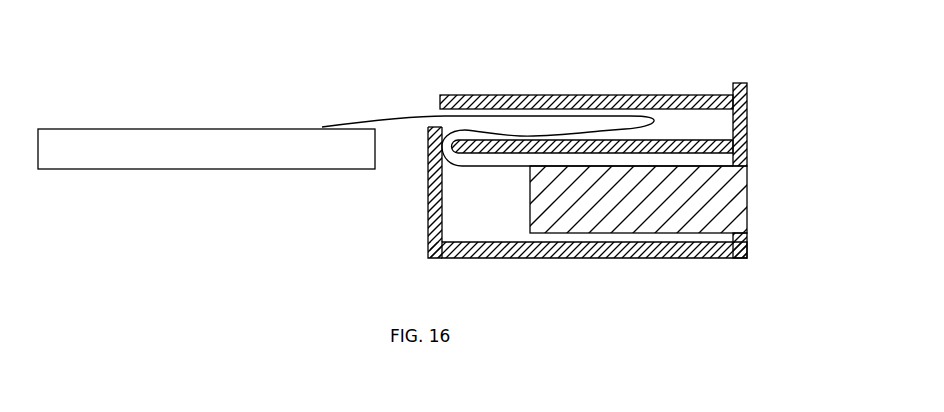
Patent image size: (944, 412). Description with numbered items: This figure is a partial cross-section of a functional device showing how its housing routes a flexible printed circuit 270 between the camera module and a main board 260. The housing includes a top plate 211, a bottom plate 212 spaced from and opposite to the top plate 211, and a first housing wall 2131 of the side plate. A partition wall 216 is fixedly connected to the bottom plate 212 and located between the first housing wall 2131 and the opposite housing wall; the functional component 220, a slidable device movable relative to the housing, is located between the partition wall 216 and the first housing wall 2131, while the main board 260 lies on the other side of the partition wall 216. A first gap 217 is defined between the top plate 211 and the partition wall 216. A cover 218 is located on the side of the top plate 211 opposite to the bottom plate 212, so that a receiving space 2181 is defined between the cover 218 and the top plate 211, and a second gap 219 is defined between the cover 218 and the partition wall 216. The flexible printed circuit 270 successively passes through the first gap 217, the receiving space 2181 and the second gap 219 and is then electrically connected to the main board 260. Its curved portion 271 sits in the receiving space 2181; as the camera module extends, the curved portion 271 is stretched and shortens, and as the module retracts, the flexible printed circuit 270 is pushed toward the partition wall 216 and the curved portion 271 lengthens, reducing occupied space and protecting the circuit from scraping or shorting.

The main board 260 is at (150, 152).
The flexible printed circuit 270 is at (483, 112).
The curved portion 271 is at (593, 110).
The cover 218 is at (475, 110).
The receiving space 2181 is at (682, 120).
The first housing wall 2131 is at (730, 126).
The top plate 211 is at (710, 146).
The second gap 219 is at (435, 110).
The first gap 217 is at (435, 213).
The partition wall 216 is at (428, 257).
The bottom plate 212 is at (697, 253).
The functional component 220 is at (735, 196).